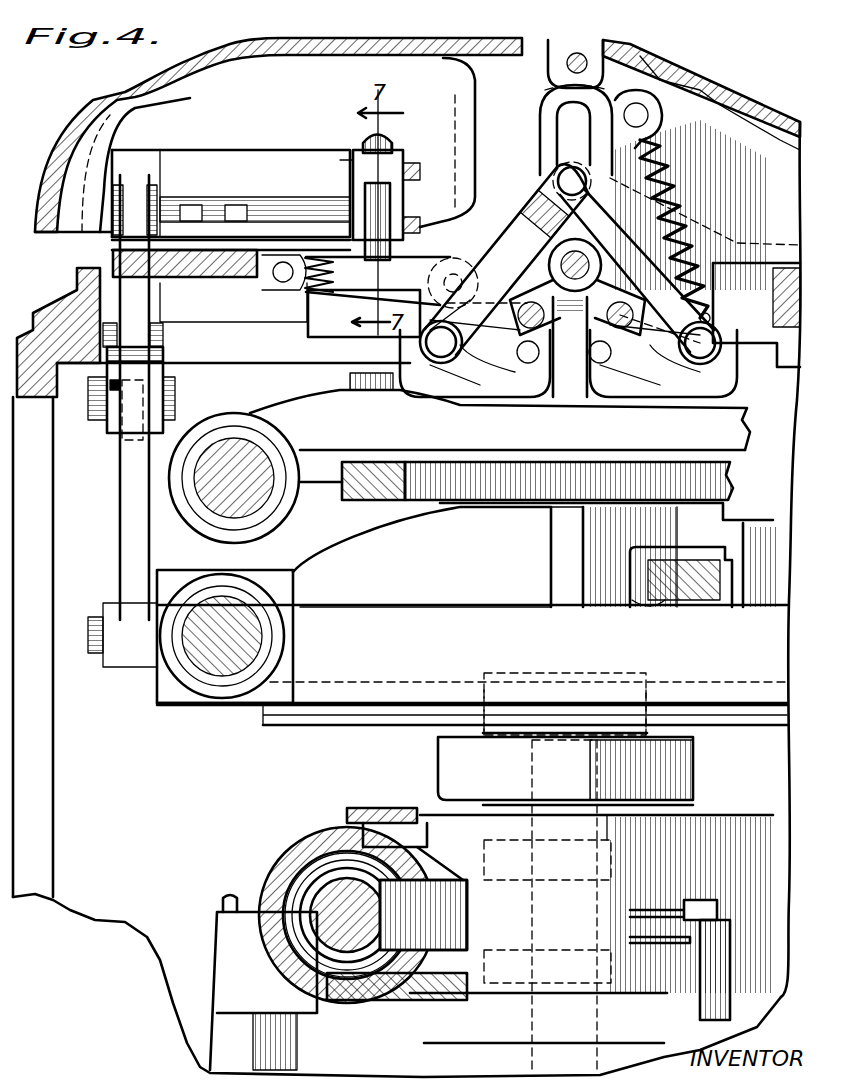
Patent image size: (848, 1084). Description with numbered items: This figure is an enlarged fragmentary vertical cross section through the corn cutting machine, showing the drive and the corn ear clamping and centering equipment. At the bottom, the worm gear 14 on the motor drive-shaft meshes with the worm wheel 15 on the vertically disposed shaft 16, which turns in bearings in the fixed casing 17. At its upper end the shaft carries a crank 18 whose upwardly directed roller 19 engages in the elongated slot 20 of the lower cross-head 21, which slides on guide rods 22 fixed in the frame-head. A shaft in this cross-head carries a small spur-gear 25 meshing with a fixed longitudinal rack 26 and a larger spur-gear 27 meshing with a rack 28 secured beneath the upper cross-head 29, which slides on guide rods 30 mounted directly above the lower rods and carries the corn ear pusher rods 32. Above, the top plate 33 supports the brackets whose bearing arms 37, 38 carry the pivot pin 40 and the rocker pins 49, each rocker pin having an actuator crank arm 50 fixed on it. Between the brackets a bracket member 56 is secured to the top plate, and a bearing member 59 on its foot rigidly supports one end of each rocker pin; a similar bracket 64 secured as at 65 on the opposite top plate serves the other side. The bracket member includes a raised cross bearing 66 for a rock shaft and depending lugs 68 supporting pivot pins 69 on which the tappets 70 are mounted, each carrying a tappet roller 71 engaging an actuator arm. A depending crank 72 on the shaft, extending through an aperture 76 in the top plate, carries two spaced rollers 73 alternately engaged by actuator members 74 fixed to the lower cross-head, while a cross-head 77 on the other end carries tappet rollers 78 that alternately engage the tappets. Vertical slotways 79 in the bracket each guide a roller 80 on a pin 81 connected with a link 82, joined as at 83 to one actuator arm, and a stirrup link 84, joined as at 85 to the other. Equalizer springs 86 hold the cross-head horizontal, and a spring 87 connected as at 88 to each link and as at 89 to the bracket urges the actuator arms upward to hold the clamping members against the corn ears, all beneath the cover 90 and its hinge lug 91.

The worm gear 14 is at (330, 900).
The worm wheel 15 is at (403, 817).
The vertically disposed shaft 16 is at (544, 773).
The casing 17 is at (493, 857).
The crank 18 is at (677, 768).
The roller 19 is at (524, 680).
The elongated slot 20 is at (287, 722).
The lower cross-head 21 is at (472, 605).
The guide rods 22 is at (223, 663).
The small spur-gear 25 is at (624, 610).
The longitudinal rack 26 is at (691, 600).
The larger spur-gear 27 is at (437, 490).
The longitudinal rack 28 is at (353, 483).
The upper cross-head 29 is at (403, 422).
The guide rods 30 is at (222, 452).
The corn ear pusher rods 32 is at (590, 258).
The top plate 33 is at (180, 267).
The bearing arm 37 is at (598, 290).
The bearing arm 38 is at (634, 392).
The pivot pin 40 is at (581, 397).
The rocker pin 49 is at (527, 303).
The actuator crank arm 50 is at (524, 337).
The bracket member 56 is at (747, 147).
The bearing member 59 is at (497, 357).
The bracket 64 is at (240, 230).
The securing means 65 is at (232, 207).
The raised cross bearing 66 is at (300, 150).
The depending lugs 68 is at (266, 286).
The pivot pins 69 is at (280, 283).
The tappet 70 is at (417, 270).
The tappet roller 71 is at (448, 290).
The depending crank 72 is at (140, 302).
The rollers 73 is at (120, 443).
The actuator members 74 is at (127, 498).
The aperture 76 is at (127, 285).
The cross-head 77 is at (397, 168).
The tappet rollers 78 is at (395, 145).
The slotways 79 is at (593, 103).
The roller 80 is at (562, 168).
The pin 81 is at (565, 176).
The link 82 is at (607, 220).
The connection 83 is at (707, 343).
The stirrup link 84 is at (499, 240).
The connection 85 is at (425, 343).
The equalizer springs 86 is at (364, 313).
The spring 87 is at (637, 167).
The spring connection 88 is at (707, 317).
The spring connection 89 is at (638, 114).
The cover 90 is at (320, 48).
The lug 91 is at (577, 55).